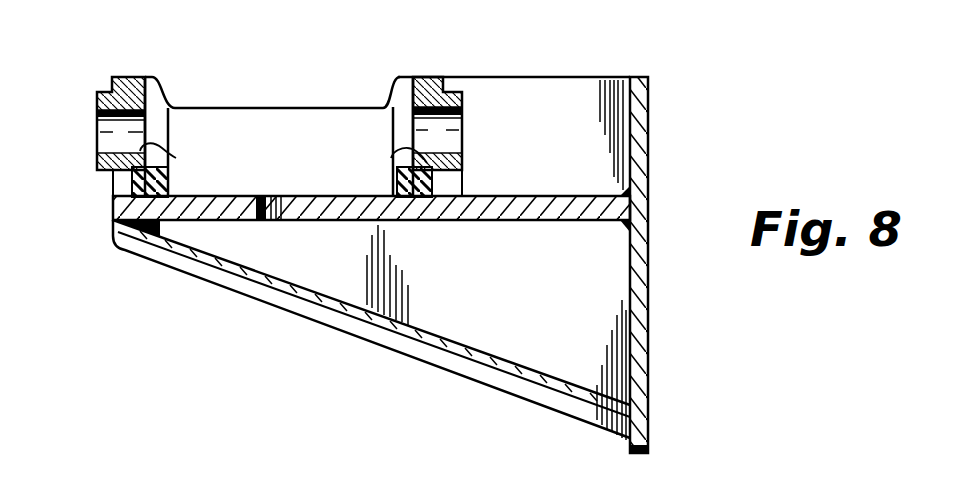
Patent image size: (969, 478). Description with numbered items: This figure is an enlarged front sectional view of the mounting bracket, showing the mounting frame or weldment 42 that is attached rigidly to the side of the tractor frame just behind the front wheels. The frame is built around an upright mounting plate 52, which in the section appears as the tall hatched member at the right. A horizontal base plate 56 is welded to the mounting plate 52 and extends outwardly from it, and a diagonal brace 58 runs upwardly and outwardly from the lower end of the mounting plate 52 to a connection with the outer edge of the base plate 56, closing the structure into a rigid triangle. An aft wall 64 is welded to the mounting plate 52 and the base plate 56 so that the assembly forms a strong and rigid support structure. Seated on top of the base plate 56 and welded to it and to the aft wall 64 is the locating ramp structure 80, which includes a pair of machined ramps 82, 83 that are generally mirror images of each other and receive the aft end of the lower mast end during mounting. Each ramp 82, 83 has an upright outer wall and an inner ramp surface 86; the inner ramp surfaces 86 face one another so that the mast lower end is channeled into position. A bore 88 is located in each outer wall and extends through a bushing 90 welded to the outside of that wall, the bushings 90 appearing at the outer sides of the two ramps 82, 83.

The mounting frame 42 is at (102, 56).
The machined ramp 83 is at (147, 77).
The bushing 90 is at (97, 98).
The inner ramp surface 86 is at (167, 123).
The bore 88 is at (176, 158).
The locating ramp structure 80 is at (372, 76).
The machined ramp 82 is at (412, 83).
The aft wall 64 is at (587, 87).
The upright mounting plate 52 is at (648, 88).
The horizontal base plate 56 is at (566, 171).
The diagonal brace 58 is at (295, 290).